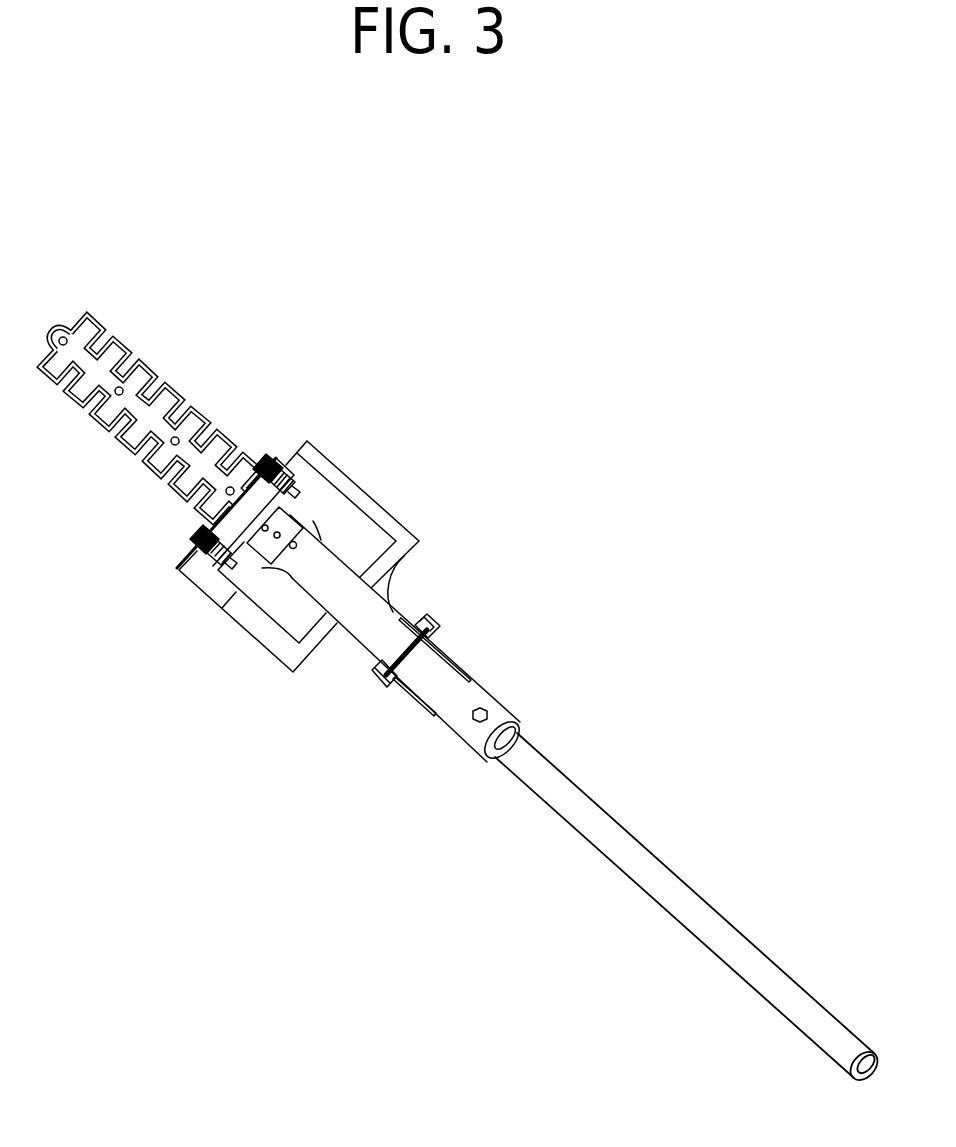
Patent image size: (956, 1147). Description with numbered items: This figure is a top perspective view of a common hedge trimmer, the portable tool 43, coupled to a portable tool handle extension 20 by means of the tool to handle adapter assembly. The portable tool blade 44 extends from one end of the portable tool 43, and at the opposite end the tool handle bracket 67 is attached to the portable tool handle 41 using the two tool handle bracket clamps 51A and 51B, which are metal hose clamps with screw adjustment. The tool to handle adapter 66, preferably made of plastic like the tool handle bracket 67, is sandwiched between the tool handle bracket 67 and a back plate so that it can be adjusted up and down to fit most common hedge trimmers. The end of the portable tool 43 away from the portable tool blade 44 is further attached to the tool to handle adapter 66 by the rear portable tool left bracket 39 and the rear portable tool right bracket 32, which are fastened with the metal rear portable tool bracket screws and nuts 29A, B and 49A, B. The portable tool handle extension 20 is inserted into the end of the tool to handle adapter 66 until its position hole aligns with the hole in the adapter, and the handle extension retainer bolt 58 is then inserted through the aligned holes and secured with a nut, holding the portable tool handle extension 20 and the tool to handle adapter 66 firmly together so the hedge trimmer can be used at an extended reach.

The portable tool handle extension 20 is at (713, 900).
The rear portable tool bracket screws and nuts 29A, B is at (380, 686).
The rear portable tool right bracket 32 is at (442, 640).
The rear portable tool left bracket 39 is at (390, 690).
The portable tool handle 41 is at (310, 515).
The portable tool 43 is at (360, 655).
The portable tool blade 44 is at (183, 400).
The rear portable tool bracket screws and nuts 49A, B is at (442, 627).
The tool handle bracket clamp 51A is at (180, 571).
The tool handle bracket clamp 51B is at (287, 470).
The handle extension retainer bolt 58 is at (505, 720).
The tool to handle adapter 66 is at (490, 695).
The tool handle bracket 67 is at (312, 518).